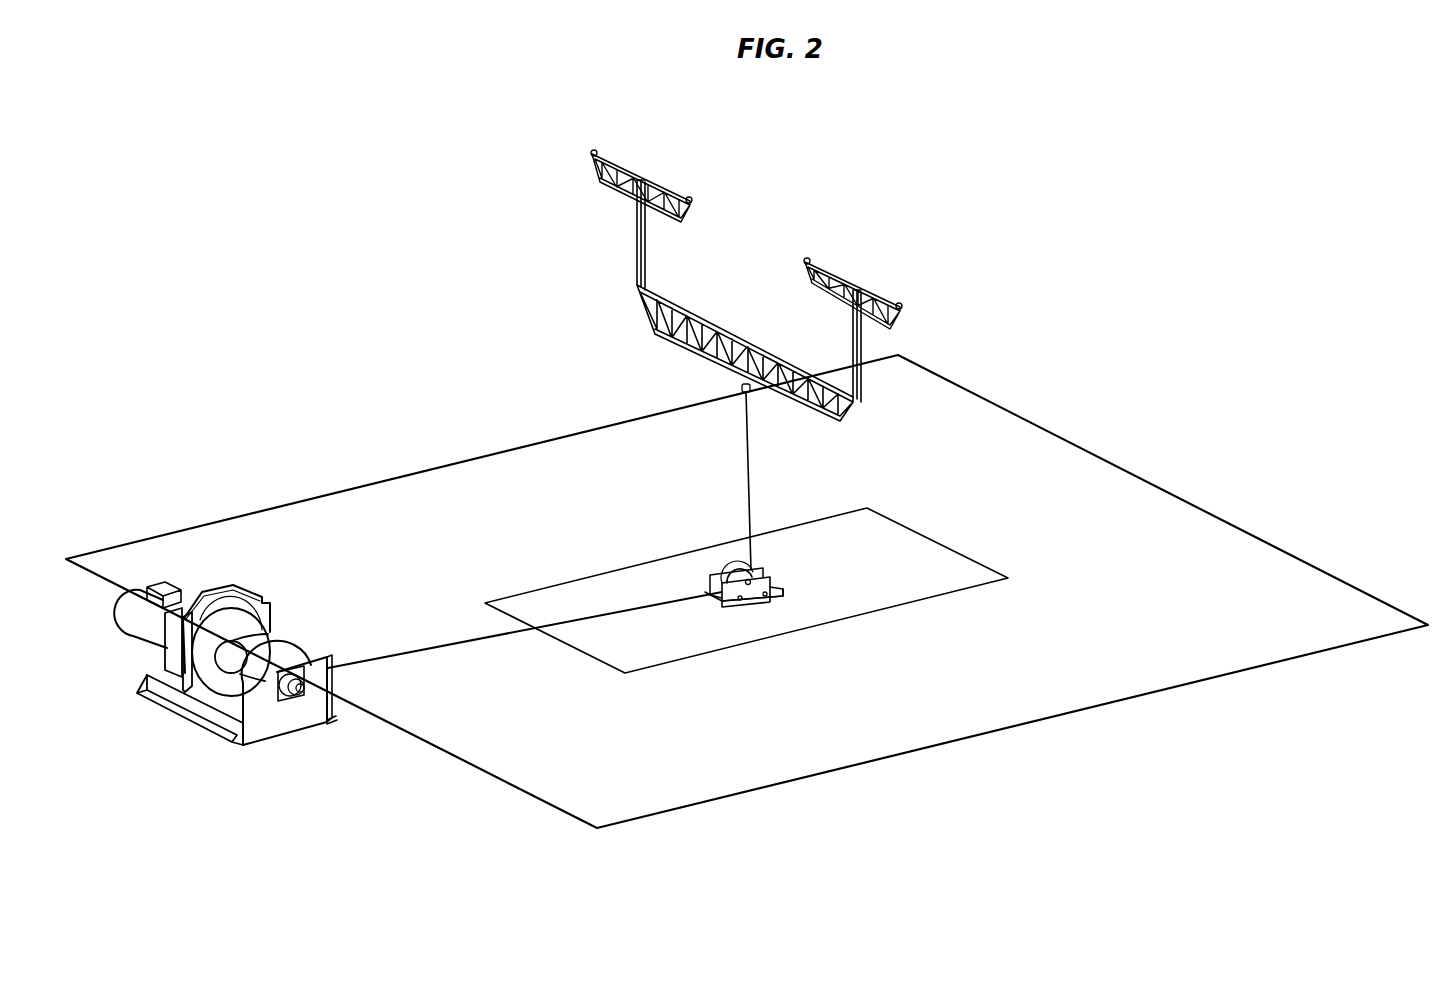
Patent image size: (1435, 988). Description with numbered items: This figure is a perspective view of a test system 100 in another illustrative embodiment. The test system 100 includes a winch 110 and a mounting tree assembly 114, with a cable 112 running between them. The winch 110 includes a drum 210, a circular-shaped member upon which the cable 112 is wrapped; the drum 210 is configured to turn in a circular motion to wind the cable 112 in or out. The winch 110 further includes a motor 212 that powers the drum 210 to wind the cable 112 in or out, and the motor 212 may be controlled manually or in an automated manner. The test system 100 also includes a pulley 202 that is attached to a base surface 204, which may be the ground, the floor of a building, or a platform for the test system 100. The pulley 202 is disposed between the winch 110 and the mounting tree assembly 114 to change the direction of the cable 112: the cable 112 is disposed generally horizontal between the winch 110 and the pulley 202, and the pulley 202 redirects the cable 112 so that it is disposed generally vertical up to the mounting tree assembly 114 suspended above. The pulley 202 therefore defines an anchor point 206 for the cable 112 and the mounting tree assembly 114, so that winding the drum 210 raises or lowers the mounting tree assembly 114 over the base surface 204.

The test system 100 is at (1128, 192).
The winch 110 is at (197, 652).
The cable 112 is at (748, 467).
The mounting tree assembly 114 is at (580, 133).
The pulley 202 is at (758, 598).
The base surface 204 is at (1243, 556).
The anchor point 206 is at (796, 561).
The drum 210 is at (220, 664).
The motor 212 is at (132, 621).